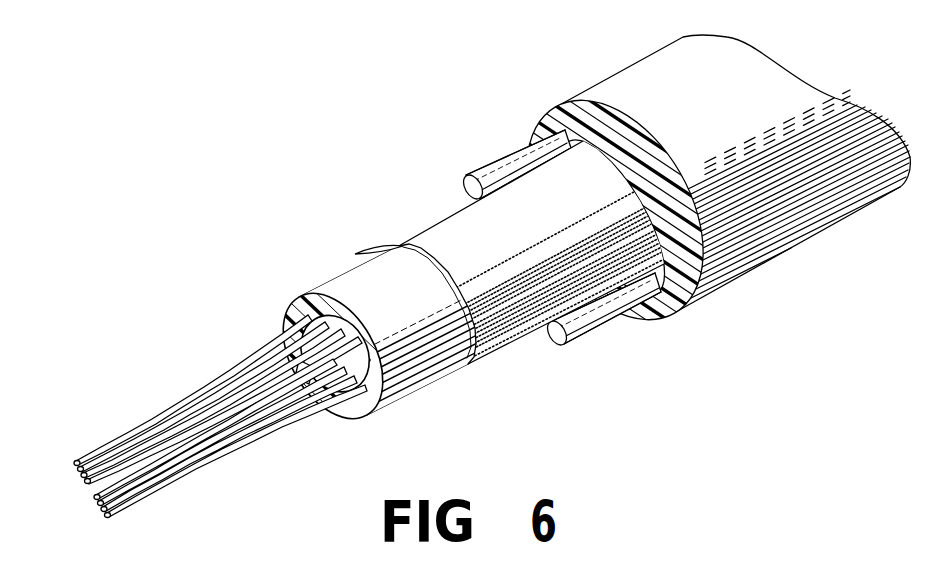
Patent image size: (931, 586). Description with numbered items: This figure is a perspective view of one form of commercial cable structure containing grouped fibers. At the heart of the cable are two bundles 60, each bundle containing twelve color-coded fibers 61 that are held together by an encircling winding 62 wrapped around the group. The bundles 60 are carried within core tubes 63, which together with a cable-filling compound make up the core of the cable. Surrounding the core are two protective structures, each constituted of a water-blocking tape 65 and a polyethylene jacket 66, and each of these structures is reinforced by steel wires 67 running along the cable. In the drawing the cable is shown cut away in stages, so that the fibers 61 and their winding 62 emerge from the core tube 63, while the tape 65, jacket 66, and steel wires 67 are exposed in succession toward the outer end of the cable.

The bundle 60 is at (196, 440).
The color-coded fiber 61 is at (100, 516).
The encircling winding 62 is at (158, 465).
The core tube 63 is at (297, 318).
The water-blocking tape 65 is at (440, 222).
The polyethylene jacket 66 is at (536, 118).
The steel wire 67 is at (480, 170).